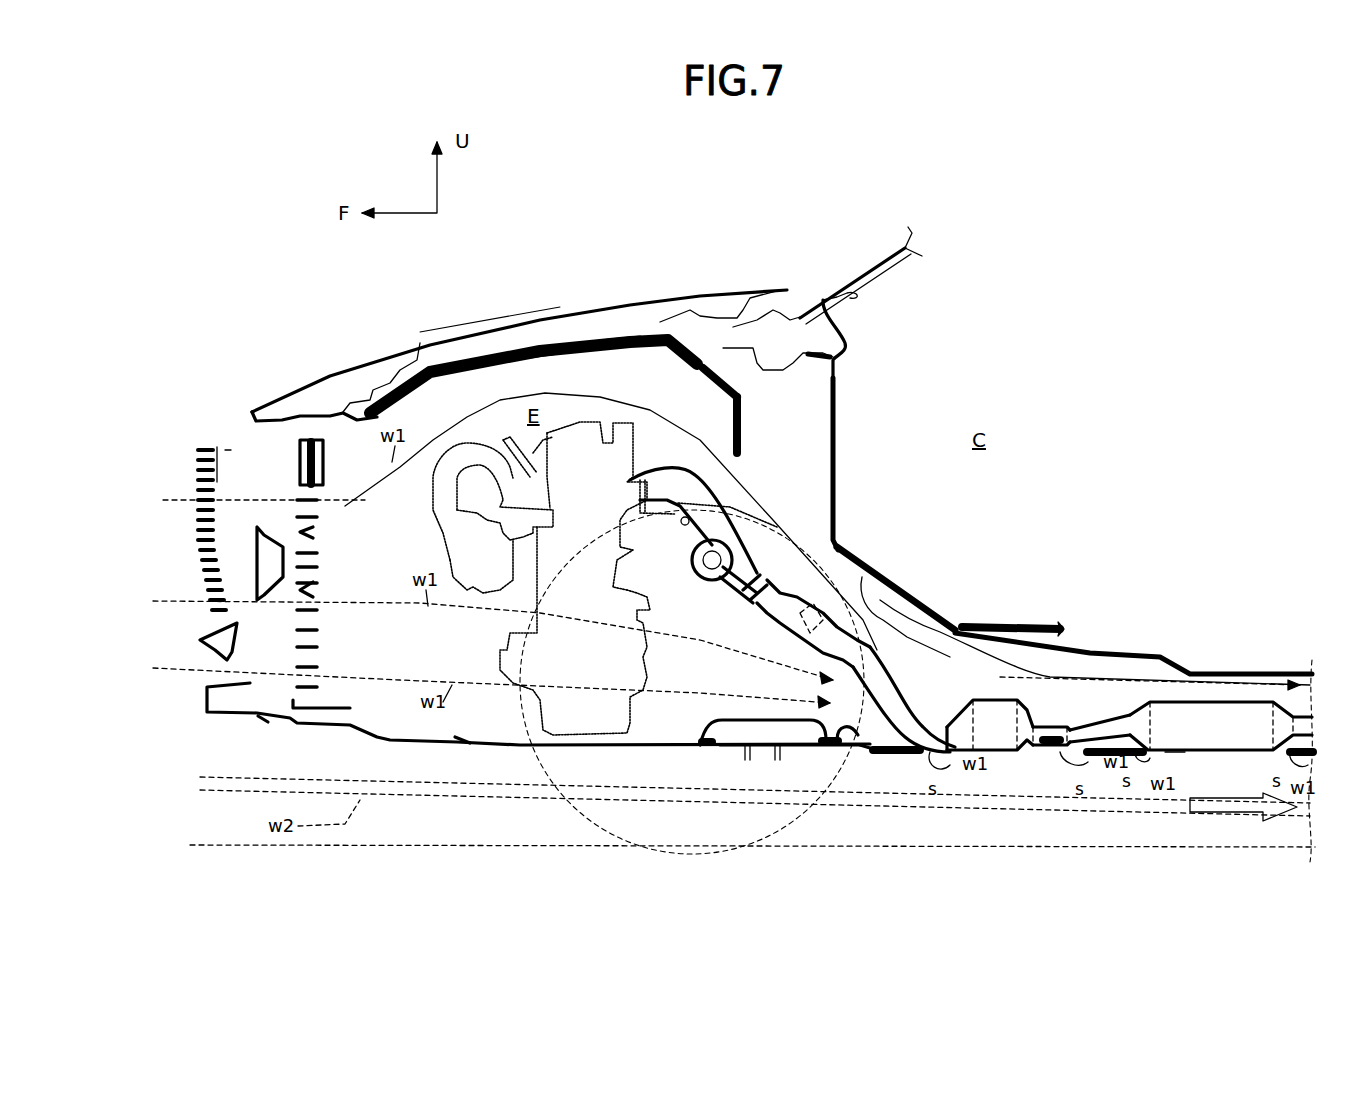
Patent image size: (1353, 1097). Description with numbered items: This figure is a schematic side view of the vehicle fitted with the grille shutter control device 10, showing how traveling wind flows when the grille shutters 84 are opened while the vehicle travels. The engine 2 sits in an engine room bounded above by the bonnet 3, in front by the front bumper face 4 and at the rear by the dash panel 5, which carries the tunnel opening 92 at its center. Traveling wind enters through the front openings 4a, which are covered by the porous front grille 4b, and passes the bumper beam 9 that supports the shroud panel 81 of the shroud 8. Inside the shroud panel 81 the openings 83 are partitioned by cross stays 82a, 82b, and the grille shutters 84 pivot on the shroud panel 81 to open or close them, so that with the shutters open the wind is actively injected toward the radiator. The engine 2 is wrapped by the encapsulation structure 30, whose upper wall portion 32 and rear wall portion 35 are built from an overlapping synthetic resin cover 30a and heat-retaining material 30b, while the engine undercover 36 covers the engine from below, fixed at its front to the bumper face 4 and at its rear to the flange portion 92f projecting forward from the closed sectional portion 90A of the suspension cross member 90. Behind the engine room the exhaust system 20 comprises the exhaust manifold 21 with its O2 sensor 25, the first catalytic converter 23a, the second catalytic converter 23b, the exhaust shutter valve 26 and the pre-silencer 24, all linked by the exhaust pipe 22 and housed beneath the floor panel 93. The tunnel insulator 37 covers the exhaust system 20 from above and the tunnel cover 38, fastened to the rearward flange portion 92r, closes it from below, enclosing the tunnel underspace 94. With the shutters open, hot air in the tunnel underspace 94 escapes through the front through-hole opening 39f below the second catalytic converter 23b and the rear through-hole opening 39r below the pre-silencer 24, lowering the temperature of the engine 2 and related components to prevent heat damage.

The engine 2 is at (497, 620).
The bonnet 3 is at (520, 322).
The front bumper face 4 is at (190, 548).
The front openings 4a is at (207, 572).
The front grille 4b is at (197, 514).
The dash panel 5 is at (840, 448).
The shroud 8 is at (350, 565).
The bumper beam 9 is at (255, 540).
The grille shutter control device 10 is at (565, 245).
The exhaust system 20 is at (1250, 762).
The exhaust manifold 21 is at (677, 466).
The exhaust pipe 22 is at (905, 683).
The first catalytic converter 23a is at (788, 636).
The second catalytic converter 23b is at (996, 752).
The pre-silencer 24 is at (1200, 757).
The O2 sensor 25 is at (682, 525).
The exhaust shutter valve 26 is at (1050, 748).
The encapsulation structure 30 is at (482, 343).
The synthetic resin cover 30a is at (605, 333).
The heat-retaining material 30b is at (597, 358).
The upper wall portion 32 is at (565, 338).
The rear wall portion 35 is at (742, 431).
The engine undercover 36 is at (328, 735).
The tunnel insulator 37 is at (1157, 648).
The tunnel cover 38 is at (860, 752).
The front through-hole opening 39f is at (1016, 757).
The rear through-hole opening 39r is at (1173, 760).
The shroud panel 81 is at (323, 474).
The cross stay 82a is at (316, 533).
The cross stay 82b is at (316, 592).
The openings 83 is at (322, 642).
The grille shutters 84 is at (313, 694).
The suspension cross member 90 is at (740, 750).
The closed sectional portion 90A is at (778, 746).
The tunnel opening 92 is at (878, 608).
The flange portion 92f is at (702, 738).
The flange portion 92r is at (866, 715).
The floor panel 93 is at (1026, 622).
The tunnel underspace 94 is at (1051, 716).